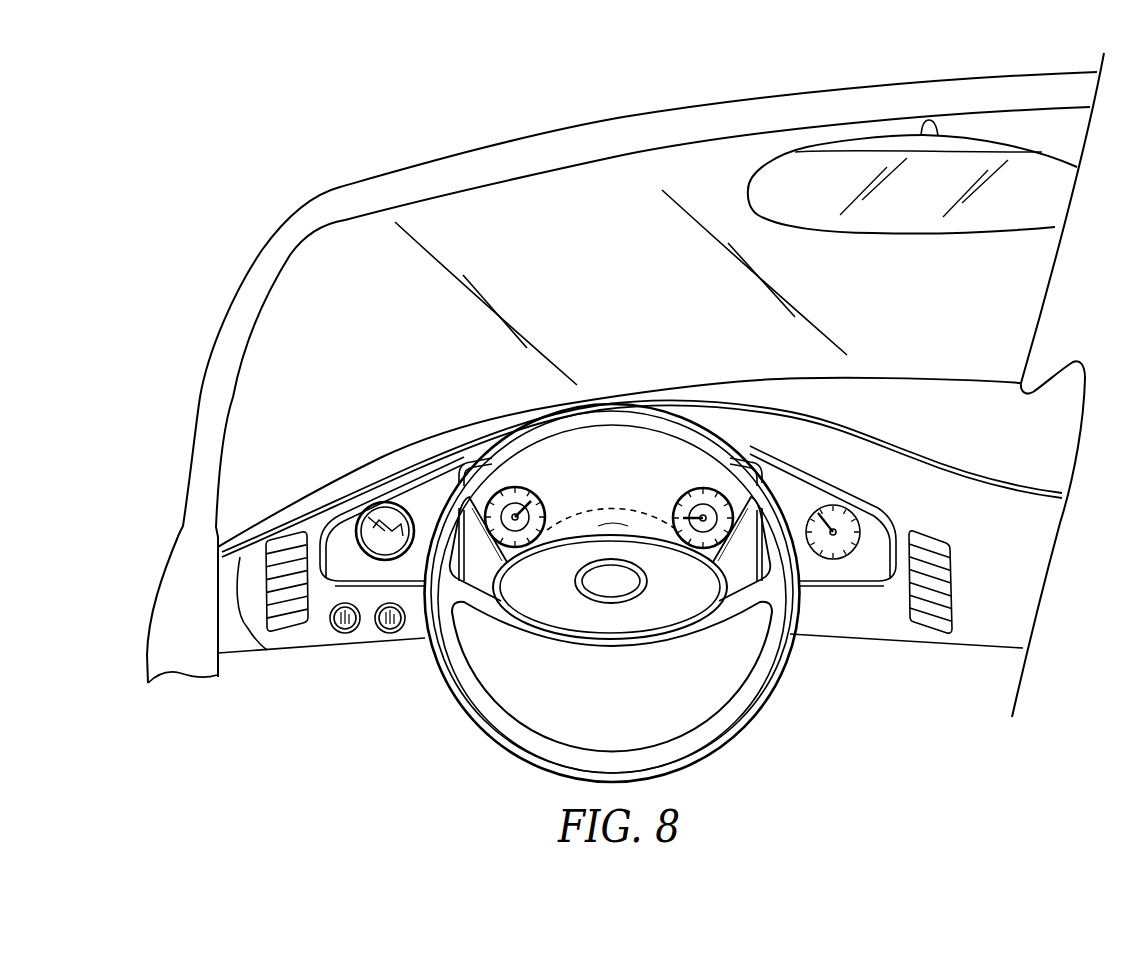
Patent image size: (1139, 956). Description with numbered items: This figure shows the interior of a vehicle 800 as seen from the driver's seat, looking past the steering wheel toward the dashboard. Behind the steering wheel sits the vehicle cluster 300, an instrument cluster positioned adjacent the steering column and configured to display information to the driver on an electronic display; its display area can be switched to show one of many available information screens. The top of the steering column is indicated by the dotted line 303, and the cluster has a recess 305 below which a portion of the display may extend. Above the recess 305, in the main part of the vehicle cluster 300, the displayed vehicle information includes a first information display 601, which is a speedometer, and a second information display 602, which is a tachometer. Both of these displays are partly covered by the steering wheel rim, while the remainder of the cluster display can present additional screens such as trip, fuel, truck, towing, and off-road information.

The vehicle 800 is at (389, 426).
The vehicle cluster 300 is at (757, 455).
The dotted line 303 is at (577, 513).
The recess 305 is at (613, 524).
The first information display 601 is at (515, 487).
The second information display 602 is at (701, 487).